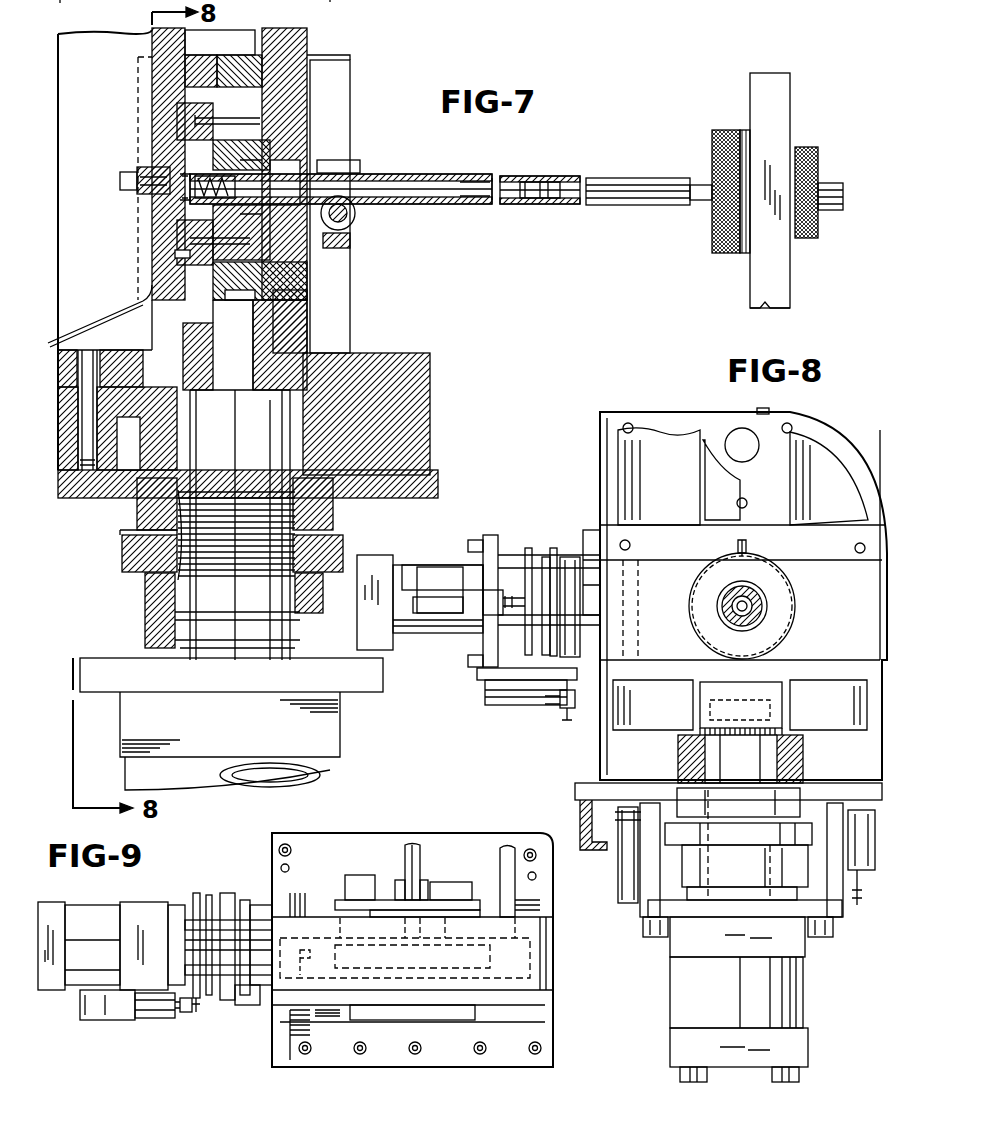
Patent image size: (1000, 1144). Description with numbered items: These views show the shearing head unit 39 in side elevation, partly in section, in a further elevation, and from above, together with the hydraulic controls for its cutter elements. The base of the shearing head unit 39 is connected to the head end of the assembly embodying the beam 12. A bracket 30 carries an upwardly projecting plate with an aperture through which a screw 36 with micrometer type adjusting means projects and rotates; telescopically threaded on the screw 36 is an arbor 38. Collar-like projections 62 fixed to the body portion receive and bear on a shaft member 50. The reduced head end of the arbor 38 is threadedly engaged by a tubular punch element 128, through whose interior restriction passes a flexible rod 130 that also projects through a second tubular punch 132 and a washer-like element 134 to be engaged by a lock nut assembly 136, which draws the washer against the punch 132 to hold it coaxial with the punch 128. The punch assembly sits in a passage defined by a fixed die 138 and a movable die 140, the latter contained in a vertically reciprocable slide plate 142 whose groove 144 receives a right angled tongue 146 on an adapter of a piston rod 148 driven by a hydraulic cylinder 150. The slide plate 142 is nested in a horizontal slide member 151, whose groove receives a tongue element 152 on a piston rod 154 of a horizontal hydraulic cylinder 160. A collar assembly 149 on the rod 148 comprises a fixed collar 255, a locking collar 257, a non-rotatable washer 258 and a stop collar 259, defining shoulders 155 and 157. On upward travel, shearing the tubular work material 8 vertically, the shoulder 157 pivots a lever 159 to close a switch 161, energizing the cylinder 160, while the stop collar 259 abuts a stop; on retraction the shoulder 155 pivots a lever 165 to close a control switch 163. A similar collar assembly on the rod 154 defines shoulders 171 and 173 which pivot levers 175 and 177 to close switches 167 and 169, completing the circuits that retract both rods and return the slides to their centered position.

In FIG. 7, the tubular work material 8 is at (585, 178).
In FIG. 9, the tubular work material 8 is at (405, 858).
In FIG. 8, the beam 12 is at (583, 805).
In FIG. 7, the bracket 30 is at (750, 107).
In FIG. 7, the screw 36 is at (838, 185).
In FIG. 7, the arbor 38 is at (656, 180).
In FIG. 7, the shearing head unit 39 is at (352, 86).
In FIG. 8, the shearing head unit 39 is at (704, 410).
In FIG. 9, the shearing head unit 39 is at (558, 960).
In FIG. 7, the shaft member 50 is at (342, 4).
In FIG. 7, the collar-like projection 62 is at (164, 5).
In FIG. 7, the tubular punch element 128 is at (433, 178).
In FIG. 7, the flexible rod 130 is at (478, 182).
In FIG. 7, the tubular punch 132 is at (200, 192).
In FIG. 7, the washer-like element 134 is at (195, 178).
In FIG. 7, the lock nut assembly 136 is at (170, 190).
In FIG. 7, the fixed die 138 is at (250, 262).
In FIG. 7, the movable die 140 is at (178, 268).
In FIG. 7, the slide plate 142 is at (255, 320).
In FIG. 7, the groove 144 is at (235, 525).
In FIG. 8, the groove 144 is at (700, 706).
In FIG. 7, the right angled tongue 146 is at (262, 340).
In FIG. 8, the right angled tongue 146 is at (785, 706).
In FIG. 7, the piston rod 148 is at (262, 556).
In FIG. 8, the collar assembly 149 is at (705, 880).
In FIG. 7, the hydraulic cylinder 150 is at (338, 770).
In FIG. 8, the hydraulic cylinder 150 is at (720, 998).
In FIG. 9, the horizontal slide member 151 is at (305, 1000).
In FIG. 8, the right angled tongue element 152 is at (648, 615).
In FIG. 9, the right angled tongue element 152 is at (405, 947).
In FIG. 8, the piston rod 154 is at (625, 592).
In FIG. 9, the piston rod 154 is at (248, 995).
In FIG. 7, the shoulder 155 is at (148, 640).
In FIG. 7, the shoulder 157 is at (125, 530).
In FIG. 8, the lever 159 is at (680, 800).
In FIG. 8, the hydraulic cylinder 160 is at (405, 565).
In FIG. 9, the hydraulic cylinder 160 is at (100, 912).
In FIG. 8, the switch 161 is at (620, 878).
In FIG. 8, the control switch 163 is at (878, 835).
In FIG. 8, the lever 165 is at (780, 905).
In FIG. 8, the switch 167 is at (515, 705).
In FIG. 8, the switch 169 is at (438, 620).
In FIG. 9, the switch 169 is at (120, 1012).
In FIG. 8, the shoulder 171 is at (572, 545).
In FIG. 9, the shoulder 171 is at (240, 893).
In FIG. 8, the shoulder 173 is at (525, 538).
In FIG. 9, the shoulder 173 is at (190, 900).
In FIG. 8, the lever 175 is at (583, 707).
In FIG. 8, the lever 177 is at (478, 600).
In FIG. 9, the lever 177 is at (195, 1020).
In FIG. 7, the fixed collar 255 is at (138, 598).
In FIG. 8, the fixed collar 255 is at (715, 900).
In FIG. 7, the locking collar 257 is at (118, 560).
In FIG. 8, the locking collar 257 is at (663, 846).
In FIG. 7, the non-rotatable washer 258 is at (340, 535).
In FIG. 7, the stop collar 259 is at (137, 520).
In FIG. 8, the stop collar 259 is at (800, 805).